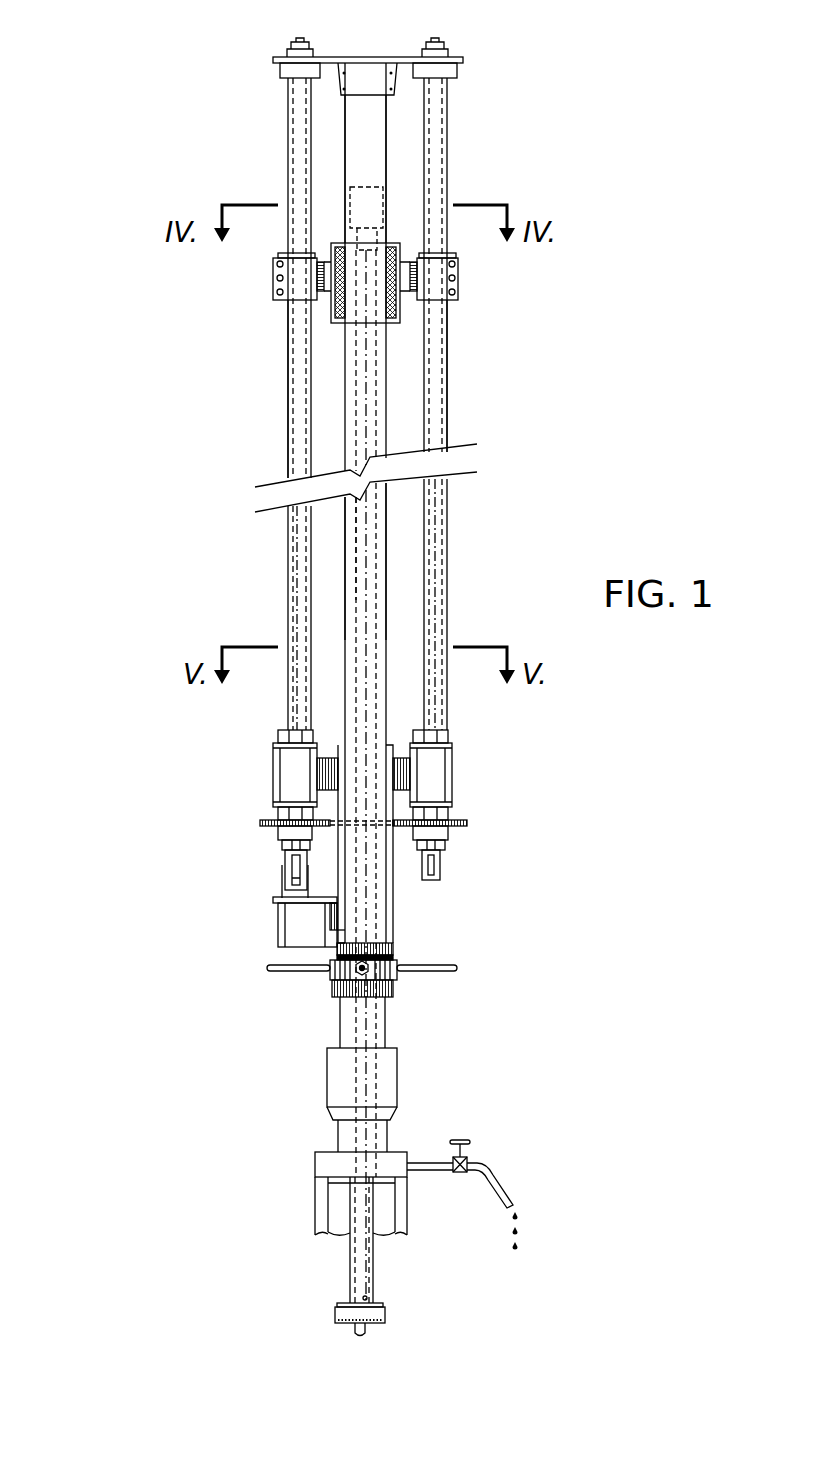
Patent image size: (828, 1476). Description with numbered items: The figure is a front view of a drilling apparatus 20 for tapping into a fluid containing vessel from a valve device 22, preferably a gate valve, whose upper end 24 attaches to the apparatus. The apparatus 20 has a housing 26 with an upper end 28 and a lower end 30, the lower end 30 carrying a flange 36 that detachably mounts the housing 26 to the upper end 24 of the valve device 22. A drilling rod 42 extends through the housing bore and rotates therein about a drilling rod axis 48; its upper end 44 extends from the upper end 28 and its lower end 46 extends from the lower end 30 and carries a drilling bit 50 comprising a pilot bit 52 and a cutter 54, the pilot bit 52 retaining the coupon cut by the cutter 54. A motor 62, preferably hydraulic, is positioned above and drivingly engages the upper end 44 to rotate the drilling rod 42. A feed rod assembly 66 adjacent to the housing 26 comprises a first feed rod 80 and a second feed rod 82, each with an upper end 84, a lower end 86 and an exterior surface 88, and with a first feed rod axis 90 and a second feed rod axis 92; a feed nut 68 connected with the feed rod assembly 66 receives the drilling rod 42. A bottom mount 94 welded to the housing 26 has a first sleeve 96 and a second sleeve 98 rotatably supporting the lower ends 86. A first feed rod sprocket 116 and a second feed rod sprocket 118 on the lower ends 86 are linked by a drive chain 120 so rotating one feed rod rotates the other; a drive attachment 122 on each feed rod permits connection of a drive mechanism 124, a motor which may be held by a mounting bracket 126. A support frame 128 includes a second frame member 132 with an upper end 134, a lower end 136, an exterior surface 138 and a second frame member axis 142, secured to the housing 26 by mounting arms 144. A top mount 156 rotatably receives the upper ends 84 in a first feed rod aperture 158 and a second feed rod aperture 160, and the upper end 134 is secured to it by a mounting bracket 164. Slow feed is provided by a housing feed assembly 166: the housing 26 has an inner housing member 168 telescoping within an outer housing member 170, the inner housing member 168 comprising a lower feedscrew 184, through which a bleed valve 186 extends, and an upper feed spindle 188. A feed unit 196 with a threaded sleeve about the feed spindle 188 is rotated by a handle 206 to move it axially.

The drilling apparatus 20 is at (138, 284).
The valve device 22 is at (322, 1208).
The upper end of valve device 24 is at (318, 1182).
The housing 26 is at (388, 918).
The upper end of housing 28 is at (420, 752).
The lower end of housing 30 is at (398, 1172).
The flange 36 is at (328, 1163).
The drilling rod 42 is at (376, 550).
The upper end of drilling rod 44 is at (366, 238).
The lower end of drilling rod 46 is at (369, 1293).
The drilling rod axis 48 is at (364, 578).
The drilling bit 50 is at (385, 1315).
The pilot bit 52 is at (354, 1331).
The cutter 54 is at (337, 1310).
The motor 62 is at (368, 197).
The feed rod assembly 66 is at (498, 287).
The feed nut 68 is at (325, 290).
The first feed rod 80 is at (293, 392).
The second feed rod 82 is at (437, 378).
The upper end of feed rod 84 is at (298, 80).
The lower end of feed rod 86 is at (292, 720).
The exterior surface of feed rod 88 is at (290, 628).
The first feed rod axis 90 is at (295, 597).
The second feed rod axis 92 is at (436, 595).
The bottom mount 94 is at (400, 777).
The first sleeve 96 is at (275, 765).
The second sleeve 98 is at (455, 777).
The first feed rod sprocket 116 is at (262, 823).
The second feed rod sprocket 118 is at (468, 823).
The drive chain 120 is at (393, 827).
The drive attachment 122 is at (285, 862).
The drive mechanism 124 is at (290, 918).
The mounting bracket 126 is at (330, 920).
The support frame 128 is at (387, 353).
The second frame member 132 is at (387, 420).
The upper end of frame member 134 is at (370, 107).
The lower end of frame member 136 is at (393, 852).
The exterior surface of frame member 138 is at (387, 515).
The second frame member axis 142 is at (364, 455).
The mounting arms 144 is at (518, 819).
The top mount 156 is at (407, 60).
The first feed rod aperture 158 is at (283, 55).
The second feed rod aperture 160 is at (463, 58).
The mounting bracket 164 is at (339, 80).
The housing feed assembly 166 is at (470, 1017).
The inner housing member 168 is at (397, 1070).
The outer housing member 170 is at (343, 800).
The lower feedscrew 184 is at (387, 1095).
The bleed valve 186 is at (511, 1185).
The upper feed spindle 188 is at (377, 1033).
The feed unit 196 is at (490, 967).
The handle 206 is at (428, 970).